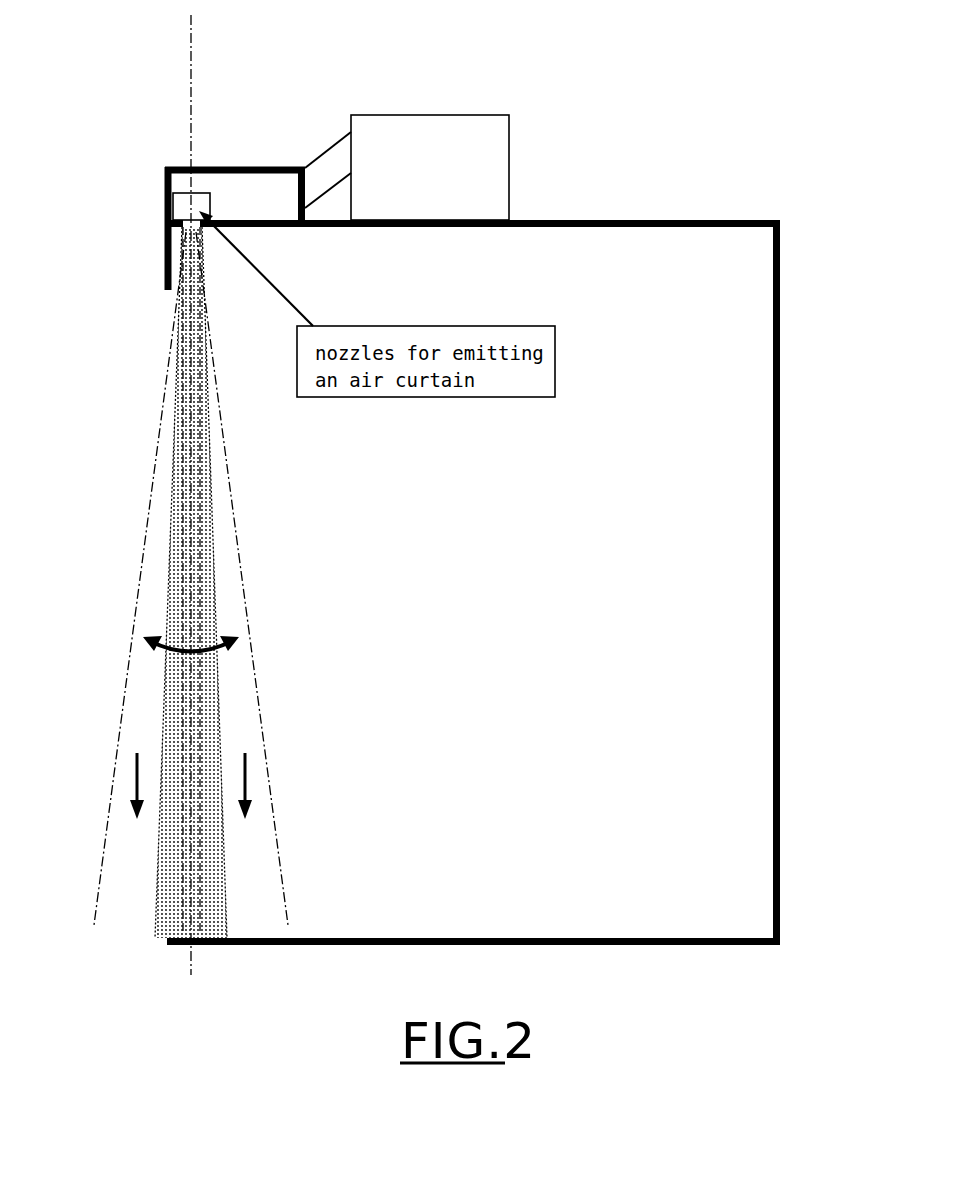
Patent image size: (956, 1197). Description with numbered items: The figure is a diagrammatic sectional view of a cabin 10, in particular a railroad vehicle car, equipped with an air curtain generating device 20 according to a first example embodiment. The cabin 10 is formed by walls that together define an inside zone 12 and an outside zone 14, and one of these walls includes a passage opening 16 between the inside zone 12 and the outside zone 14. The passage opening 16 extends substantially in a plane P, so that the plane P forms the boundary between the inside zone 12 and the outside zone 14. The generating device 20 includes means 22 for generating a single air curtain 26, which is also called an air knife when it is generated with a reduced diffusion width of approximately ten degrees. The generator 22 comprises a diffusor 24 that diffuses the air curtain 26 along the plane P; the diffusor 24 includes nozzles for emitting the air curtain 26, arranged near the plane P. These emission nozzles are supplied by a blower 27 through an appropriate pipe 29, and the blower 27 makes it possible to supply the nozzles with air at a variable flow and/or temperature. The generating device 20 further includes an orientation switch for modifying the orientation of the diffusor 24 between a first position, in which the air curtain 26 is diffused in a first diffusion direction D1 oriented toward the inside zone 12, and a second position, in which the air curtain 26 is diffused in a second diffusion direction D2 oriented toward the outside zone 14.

The cabin 10 is at (743, 218).
The inside zone 12 is at (468, 566).
The outside zone 14 is at (170, 578).
The passage opening 16 is at (165, 303).
The air curtain generating device 20 is at (254, 116).
The means for generating a single air curtain 22 is at (237, 165).
The diffusor 24 is at (212, 205).
The air curtain 26 is at (170, 578).
The blower 27 is at (509, 143).
The pipe 29 is at (332, 142).
The plane P is at (190, 46).
The first diffusion direction D1 is at (250, 780).
The second diffusion direction D2 is at (134, 776).